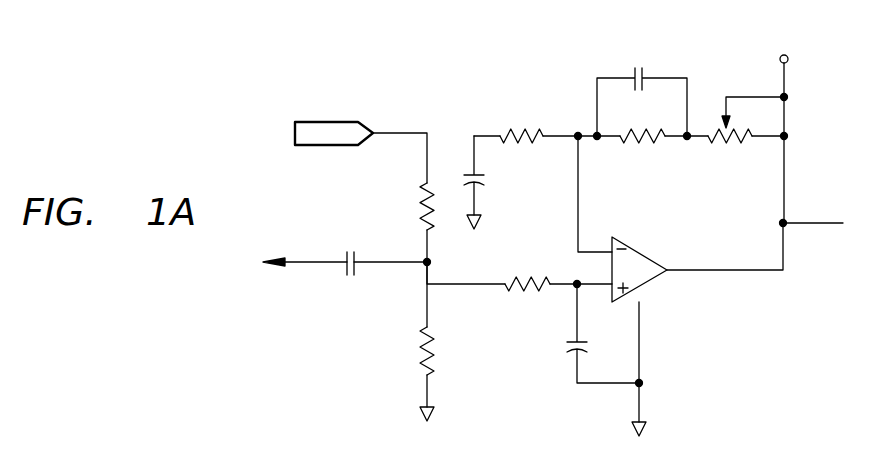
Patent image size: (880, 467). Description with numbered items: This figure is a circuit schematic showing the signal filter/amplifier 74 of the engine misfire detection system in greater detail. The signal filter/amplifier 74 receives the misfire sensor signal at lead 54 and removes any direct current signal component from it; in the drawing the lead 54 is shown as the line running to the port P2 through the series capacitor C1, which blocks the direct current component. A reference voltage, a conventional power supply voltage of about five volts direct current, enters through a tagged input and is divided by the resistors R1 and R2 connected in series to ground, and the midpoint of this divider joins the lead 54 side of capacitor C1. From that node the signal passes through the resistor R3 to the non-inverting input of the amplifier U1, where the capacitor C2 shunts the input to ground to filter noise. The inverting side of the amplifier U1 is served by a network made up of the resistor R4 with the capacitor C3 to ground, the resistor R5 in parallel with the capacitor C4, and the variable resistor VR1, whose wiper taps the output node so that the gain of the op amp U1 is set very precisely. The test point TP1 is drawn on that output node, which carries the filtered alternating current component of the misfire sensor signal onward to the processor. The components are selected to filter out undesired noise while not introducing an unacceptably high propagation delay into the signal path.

The signal filter/amplifier 74 is at (420, 93).
The lead 54 is at (296, 262).
The resistor R1 is at (413, 206).
The resistor R2 is at (444, 351).
The resistor R3 is at (527, 298).
The resistor R4 is at (521, 123).
The resistor R5 is at (642, 125).
The variable resistor VR1 is at (746, 134).
The capacitor C1 is at (351, 251).
The capacitor C2 is at (603, 333).
The capacitor C3 is at (490, 182).
The capacitor C4 is at (642, 89).
The amplifier U1 is at (639, 269).
The test point TP1 is at (785, 45).
The output port P2 is at (258, 263).